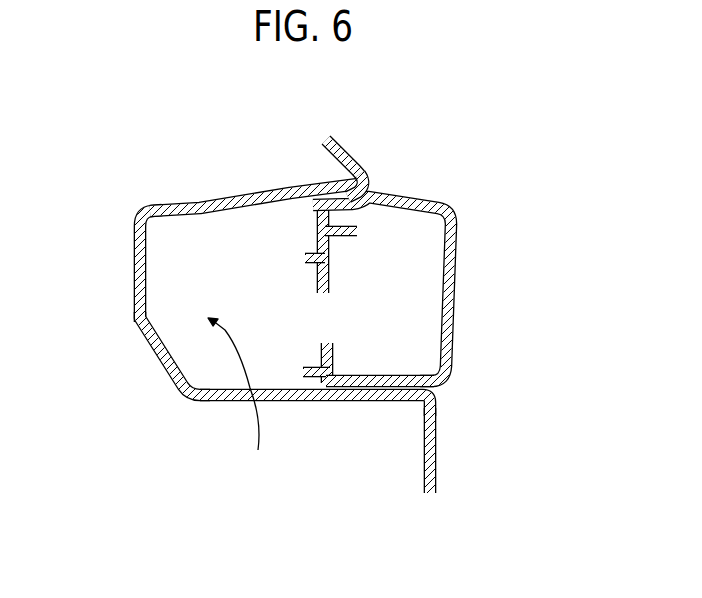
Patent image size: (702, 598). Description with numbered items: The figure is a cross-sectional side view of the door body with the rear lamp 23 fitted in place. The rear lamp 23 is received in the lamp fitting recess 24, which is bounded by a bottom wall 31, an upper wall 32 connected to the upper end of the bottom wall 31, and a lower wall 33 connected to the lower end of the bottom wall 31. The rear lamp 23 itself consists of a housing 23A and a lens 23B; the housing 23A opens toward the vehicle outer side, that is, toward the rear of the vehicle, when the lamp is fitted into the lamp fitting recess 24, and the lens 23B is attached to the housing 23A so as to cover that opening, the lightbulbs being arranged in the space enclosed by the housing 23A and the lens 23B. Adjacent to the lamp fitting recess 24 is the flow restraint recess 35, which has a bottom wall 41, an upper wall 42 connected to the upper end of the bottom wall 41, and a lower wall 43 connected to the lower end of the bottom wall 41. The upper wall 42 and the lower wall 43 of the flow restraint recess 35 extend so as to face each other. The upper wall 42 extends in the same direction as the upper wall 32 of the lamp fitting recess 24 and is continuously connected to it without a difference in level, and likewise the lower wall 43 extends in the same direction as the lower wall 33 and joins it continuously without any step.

The rear lamp 23 is at (456, 316).
The housing 23A is at (318, 248).
The lens 23B is at (452, 372).
The lamp fitting recess 24 is at (362, 193).
The bottom wall 31 is at (142, 287).
The upper wall 32 is at (312, 182).
The lower wall 33 is at (345, 407).
The flow restraint recess 35 is at (244, 405).
The bottom wall 41 is at (143, 338).
The upper wall 42 is at (194, 205).
The lower wall 43 is at (208, 401).